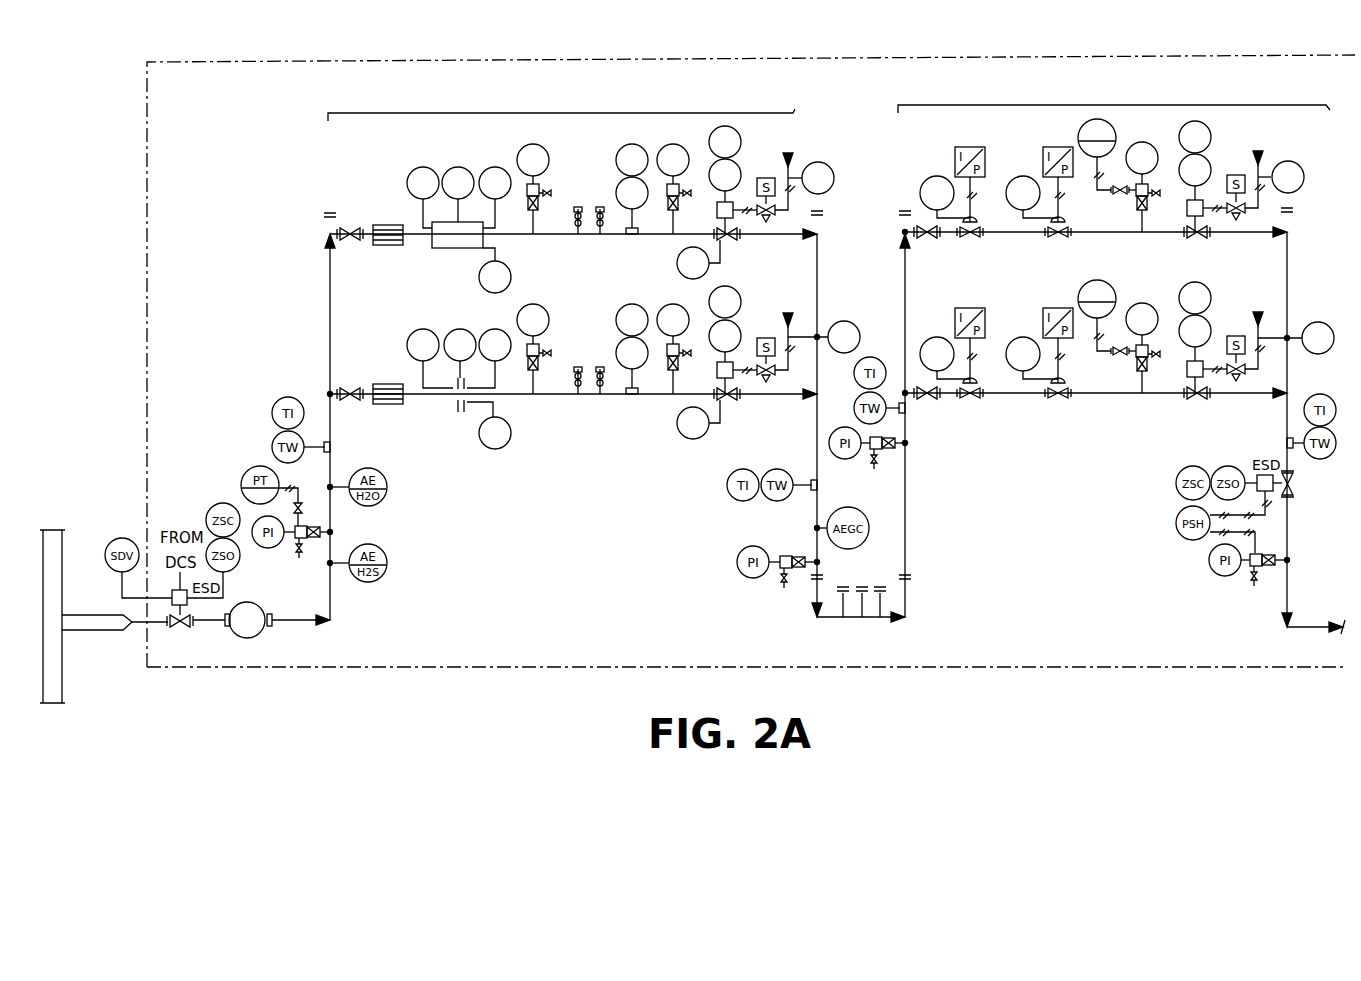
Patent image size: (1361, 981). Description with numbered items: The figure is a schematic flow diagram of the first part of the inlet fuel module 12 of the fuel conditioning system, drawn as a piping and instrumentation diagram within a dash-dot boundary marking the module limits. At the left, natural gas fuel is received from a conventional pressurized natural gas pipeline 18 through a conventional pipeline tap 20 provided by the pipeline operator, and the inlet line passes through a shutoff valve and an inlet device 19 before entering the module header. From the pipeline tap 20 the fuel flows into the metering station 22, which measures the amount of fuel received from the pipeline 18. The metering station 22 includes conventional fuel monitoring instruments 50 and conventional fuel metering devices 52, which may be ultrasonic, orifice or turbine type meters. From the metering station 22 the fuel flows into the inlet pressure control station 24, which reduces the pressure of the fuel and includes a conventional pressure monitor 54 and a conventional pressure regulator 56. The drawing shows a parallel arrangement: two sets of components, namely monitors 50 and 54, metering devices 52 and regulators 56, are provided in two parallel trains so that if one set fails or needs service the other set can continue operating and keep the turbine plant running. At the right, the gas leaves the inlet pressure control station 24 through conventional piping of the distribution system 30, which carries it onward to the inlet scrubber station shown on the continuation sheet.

The inlet fuel module 12 is at (1213, 52).
The pressurized natural gas pipeline 18 is at (62, 693).
The filter separator 19 is at (262, 632).
The pipeline tap 20 is at (82, 630).
The metering station 22 is at (580, 113).
The inlet pressure control station 24 is at (1125, 105).
The distribution system 30 is at (1295, 627).
The fuel monitoring instruments 50 is at (455, 248).
The fuel metering devices 52 is at (729, 240).
The pressure monitor 54 is at (973, 235).
The pressure regulator 56 is at (1061, 235).